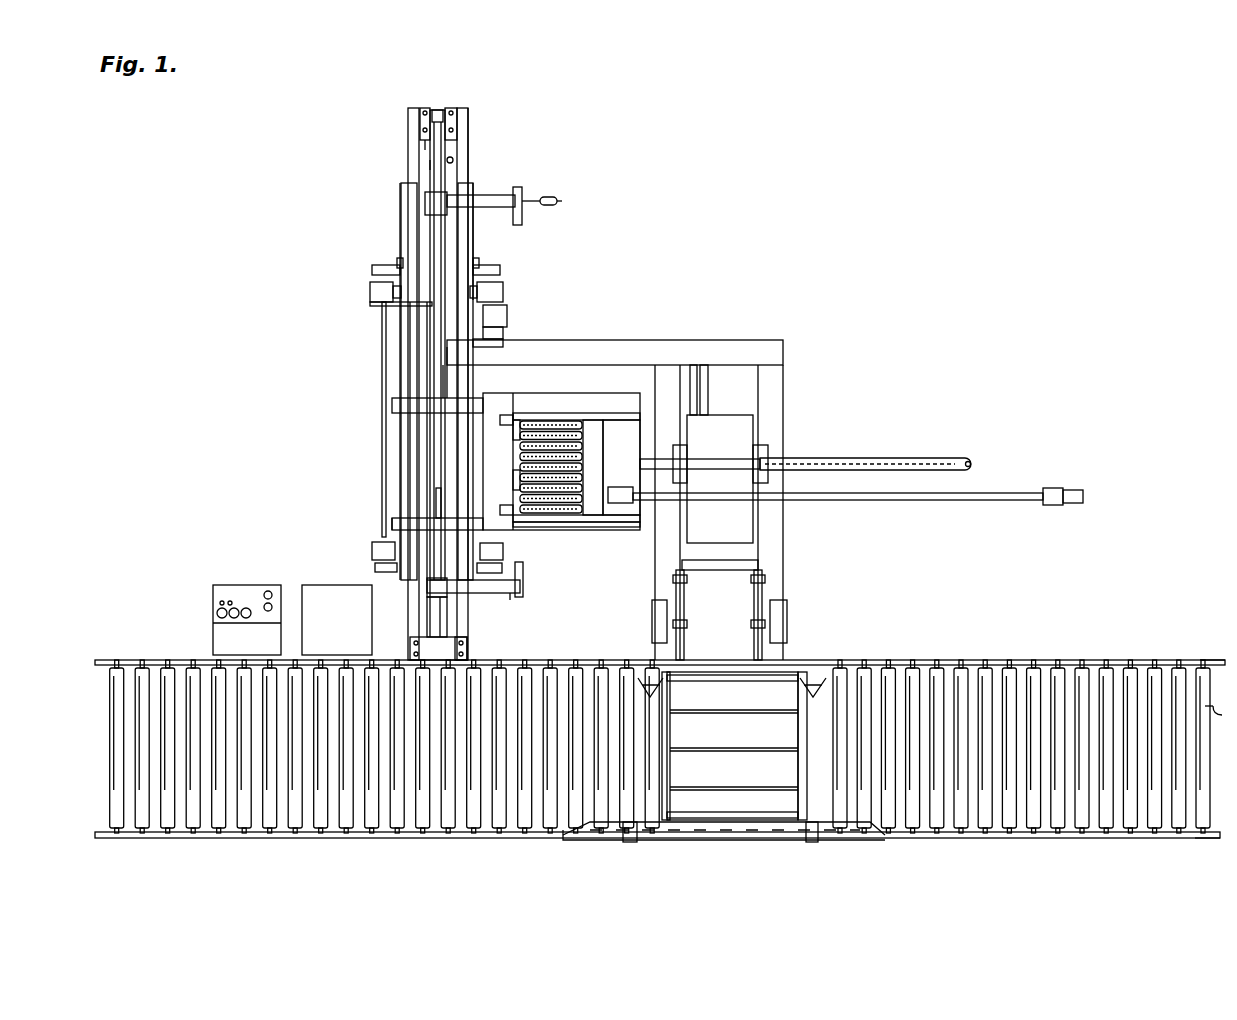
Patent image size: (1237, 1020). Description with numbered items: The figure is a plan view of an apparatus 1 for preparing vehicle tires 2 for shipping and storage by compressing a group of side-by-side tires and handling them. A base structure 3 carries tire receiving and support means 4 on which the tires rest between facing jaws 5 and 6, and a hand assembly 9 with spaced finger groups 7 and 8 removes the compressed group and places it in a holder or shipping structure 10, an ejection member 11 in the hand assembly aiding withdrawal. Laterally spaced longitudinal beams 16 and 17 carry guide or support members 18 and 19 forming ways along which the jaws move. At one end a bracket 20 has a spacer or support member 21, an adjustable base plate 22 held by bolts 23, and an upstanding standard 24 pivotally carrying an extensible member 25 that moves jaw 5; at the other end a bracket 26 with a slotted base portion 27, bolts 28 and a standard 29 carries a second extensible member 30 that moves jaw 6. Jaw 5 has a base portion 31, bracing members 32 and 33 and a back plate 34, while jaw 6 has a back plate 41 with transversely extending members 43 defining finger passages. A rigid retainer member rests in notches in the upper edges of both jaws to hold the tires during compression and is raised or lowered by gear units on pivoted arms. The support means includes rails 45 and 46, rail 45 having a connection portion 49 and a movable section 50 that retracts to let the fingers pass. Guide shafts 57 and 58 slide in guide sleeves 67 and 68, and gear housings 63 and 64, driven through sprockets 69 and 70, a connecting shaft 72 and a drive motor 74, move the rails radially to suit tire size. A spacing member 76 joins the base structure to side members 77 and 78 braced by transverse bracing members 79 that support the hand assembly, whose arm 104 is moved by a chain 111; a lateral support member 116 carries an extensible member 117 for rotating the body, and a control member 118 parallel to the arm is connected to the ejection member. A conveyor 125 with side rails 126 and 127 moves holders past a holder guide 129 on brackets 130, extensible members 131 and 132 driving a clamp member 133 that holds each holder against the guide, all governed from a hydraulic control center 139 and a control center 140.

The apparatus 1 is at (820, 315).
The tires 2 is at (556, 426).
The base structure 3 is at (473, 137).
The tire receiving and support means 4 is at (398, 450).
The jaw 5 is at (393, 402).
The jaw 6 is at (392, 524).
The finger group 7 is at (591, 422).
The finger group 8 is at (584, 524).
The hand assembly 9 is at (531, 412).
The holder or shipping structure 10 is at (772, 690).
The ejection member 11 is at (598, 442).
The longitudinal beam 16 is at (453, 160).
The longitudinal beam 17 is at (430, 166).
The guide or support member 18 is at (466, 112).
The guide or support member 19 is at (410, 128).
The bracket 20 is at (444, 115).
The spacer or support member 21 is at (425, 146).
The base plate 22 is at (423, 112).
The bolts 23 is at (455, 137).
The standard 24 is at (432, 110).
The extensible member 25 is at (511, 214).
The bracket 26 is at (427, 621).
The base portion 27 is at (457, 640).
The bolts 28 is at (410, 648).
The standard 29 is at (466, 648).
The second extensible member 30 is at (440, 612).
The base portion 31 is at (449, 368).
The bracing member 32 is at (505, 340).
The bracing member 33 is at (428, 353).
The back plate 34 is at (447, 390).
The back plate 41 is at (372, 551).
The transversely extending members 43 is at (400, 520).
The rail 45 is at (474, 228).
The rail 46 is at (402, 222).
The connection portion 49 is at (506, 483).
The movable section 50 is at (514, 430).
The guide shaft 57 is at (374, 270).
The guide shaft 58 is at (427, 586).
The gear housing 63 is at (503, 292).
The gear housing 64 is at (370, 292).
The guide sleeve 67 is at (477, 265).
The guide sleeve 68 is at (400, 262).
The sprocket 69 is at (507, 317).
The sprocket 70 is at (375, 307).
The connecting shaft 72 is at (382, 430).
The drive motor 74 is at (490, 332).
The spacing member 76 is at (655, 340).
The side member 77 is at (775, 541).
The side member 78 is at (662, 548).
The transverse bracing members 79 is at (750, 566).
The arm 104 is at (866, 460).
The chain 111 is at (811, 462).
The lateral support member 116 is at (699, 380).
The extensible member 117 is at (708, 400).
The control member 118 is at (975, 500).
The conveyor 125 is at (158, 654).
The side rail 126 is at (1180, 840).
The side rail 127 is at (1186, 660).
The holder guide 129 is at (582, 832).
The brackets 130 is at (633, 843).
The extensible member 131 is at (688, 620).
The extensible member 132 is at (754, 612).
The clamp member 133 is at (850, 678).
The hydraulic control center 139 is at (215, 588).
The control center 140 is at (304, 585).